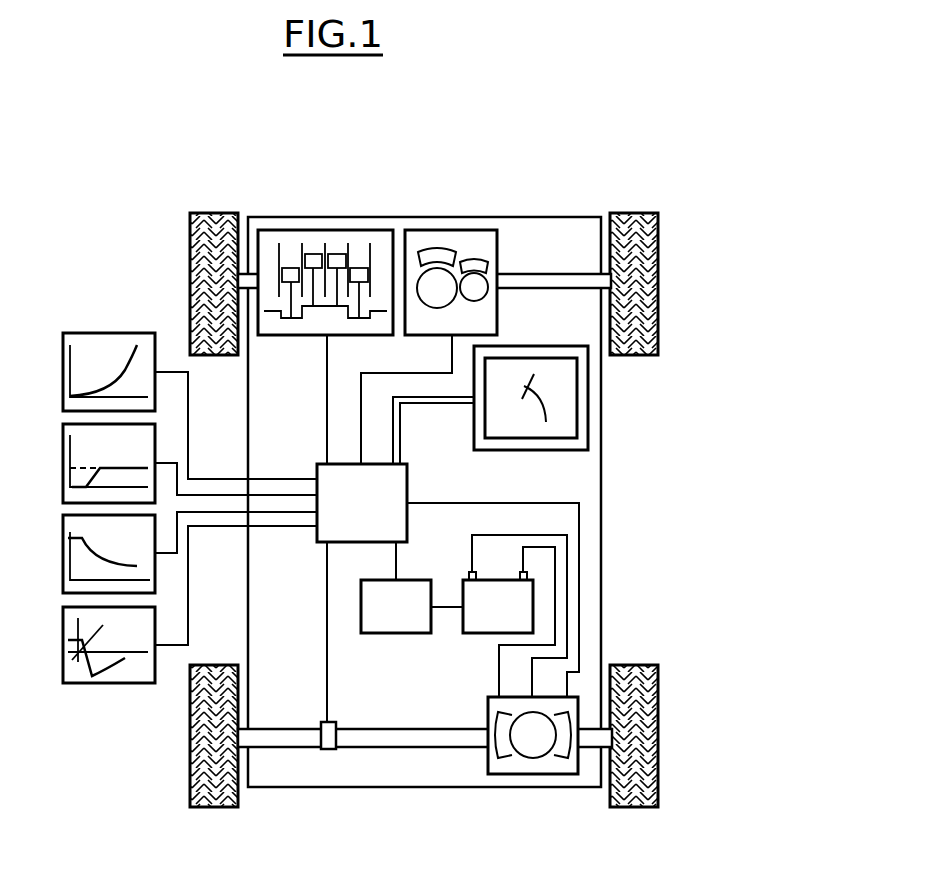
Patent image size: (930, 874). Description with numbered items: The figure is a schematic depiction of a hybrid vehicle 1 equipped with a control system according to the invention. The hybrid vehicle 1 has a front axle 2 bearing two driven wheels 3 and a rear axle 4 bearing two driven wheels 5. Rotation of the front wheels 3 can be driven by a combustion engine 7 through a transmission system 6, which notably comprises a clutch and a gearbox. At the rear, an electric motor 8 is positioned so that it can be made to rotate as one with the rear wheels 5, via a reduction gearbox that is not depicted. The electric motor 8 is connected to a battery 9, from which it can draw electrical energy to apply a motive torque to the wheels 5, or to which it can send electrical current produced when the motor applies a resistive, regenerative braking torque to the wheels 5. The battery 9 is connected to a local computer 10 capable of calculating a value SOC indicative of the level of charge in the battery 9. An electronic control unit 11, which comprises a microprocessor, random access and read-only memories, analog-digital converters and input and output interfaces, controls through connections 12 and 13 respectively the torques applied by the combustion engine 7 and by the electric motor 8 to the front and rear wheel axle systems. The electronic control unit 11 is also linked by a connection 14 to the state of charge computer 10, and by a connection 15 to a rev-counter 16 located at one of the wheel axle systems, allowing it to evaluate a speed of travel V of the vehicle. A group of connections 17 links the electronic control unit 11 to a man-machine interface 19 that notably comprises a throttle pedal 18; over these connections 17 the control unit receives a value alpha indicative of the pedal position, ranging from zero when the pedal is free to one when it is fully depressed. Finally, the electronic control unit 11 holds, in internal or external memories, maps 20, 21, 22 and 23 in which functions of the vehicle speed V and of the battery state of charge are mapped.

The hybrid vehicle 1 is at (606, 162).
The front axle 2 is at (547, 273).
The driven wheels 3 is at (214, 212).
The rear axle 4 is at (593, 748).
The driven wheels 5 is at (213, 808).
The transmission system 6 is at (452, 229).
The combustion engine 7 is at (327, 229).
The electric motor 8 is at (533, 775).
The battery 9 is at (470, 634).
The local computer 10 is at (396, 634).
The electronic control unit 11 is at (408, 527).
The connection 12 is at (360, 408).
The connection 13 is at (492, 502).
The connection 14 is at (397, 560).
The connection 15 is at (326, 633).
The rev-counter 16 is at (329, 750).
The group of connections 17 is at (437, 405).
The throttle pedal 18 is at (578, 410).
The man-machine interface 19 is at (589, 398).
The map 20 is at (62, 372).
The map 21 is at (62, 463).
The map 22 is at (62, 553).
The map 23 is at (62, 645).